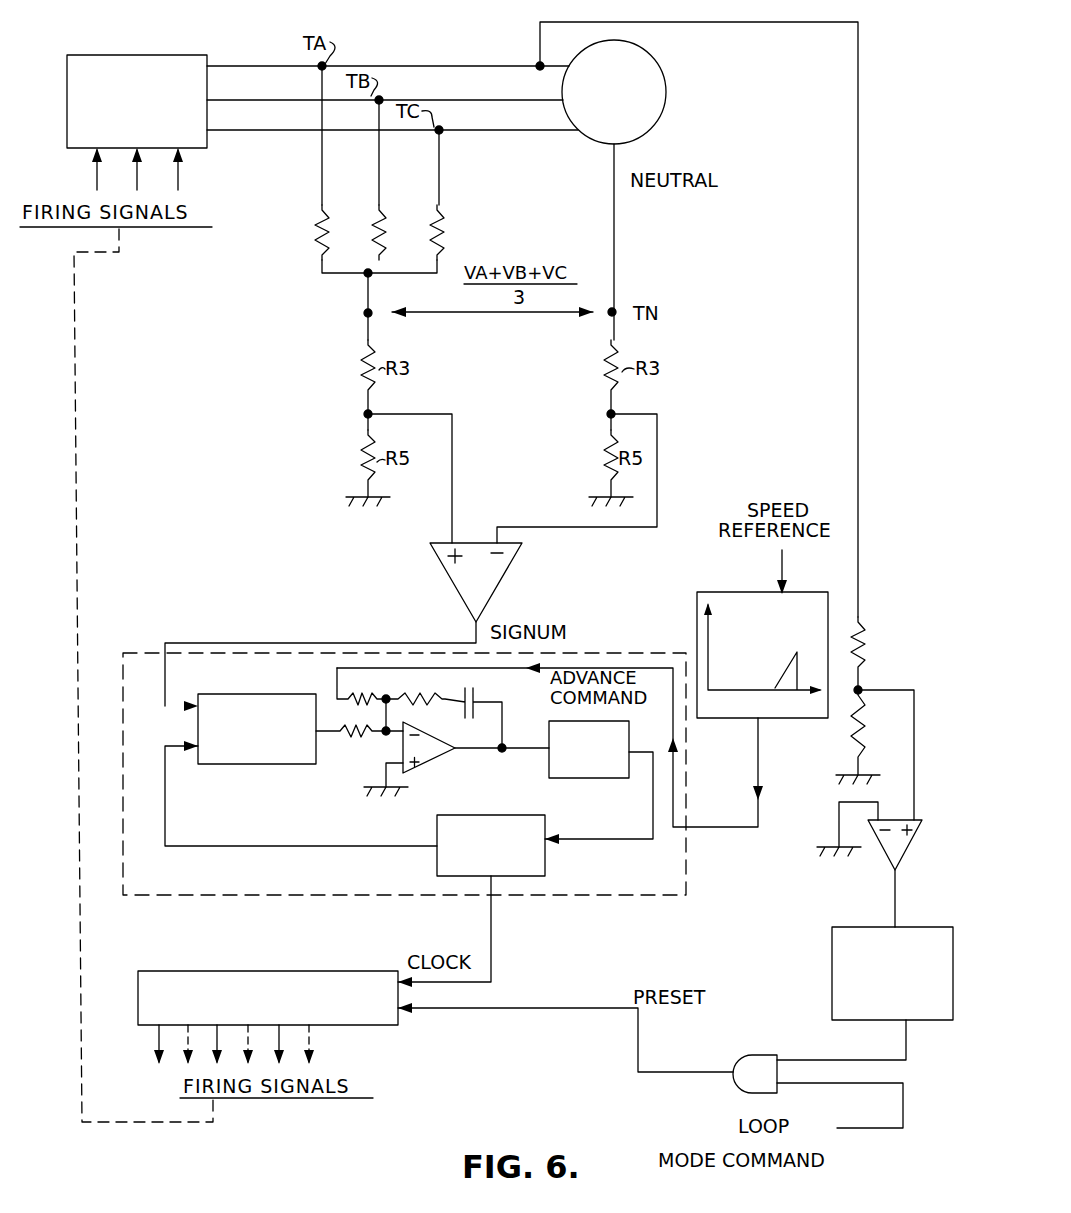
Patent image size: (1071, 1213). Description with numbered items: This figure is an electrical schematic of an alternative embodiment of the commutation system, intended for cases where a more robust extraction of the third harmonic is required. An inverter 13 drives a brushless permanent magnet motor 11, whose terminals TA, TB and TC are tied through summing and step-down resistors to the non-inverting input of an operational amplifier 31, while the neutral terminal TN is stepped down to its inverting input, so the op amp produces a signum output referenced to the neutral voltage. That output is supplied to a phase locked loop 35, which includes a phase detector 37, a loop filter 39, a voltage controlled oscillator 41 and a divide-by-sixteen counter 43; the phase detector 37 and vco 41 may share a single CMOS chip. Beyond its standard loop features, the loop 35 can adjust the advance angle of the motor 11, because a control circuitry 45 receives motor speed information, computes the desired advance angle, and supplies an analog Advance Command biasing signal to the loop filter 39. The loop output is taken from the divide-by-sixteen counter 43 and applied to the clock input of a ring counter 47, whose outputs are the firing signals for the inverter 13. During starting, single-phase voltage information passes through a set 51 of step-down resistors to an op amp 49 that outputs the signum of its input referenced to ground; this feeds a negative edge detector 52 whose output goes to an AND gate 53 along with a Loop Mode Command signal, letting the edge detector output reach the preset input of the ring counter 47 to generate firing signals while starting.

The brushless permanent magnet motor 11 is at (665, 81).
The inverter 13 is at (205, 55).
The operational amplifier 31 is at (451, 580).
The phase locked loop 35 is at (135, 660).
The phase detector 37 is at (265, 694).
The loop filter 39 is at (370, 764).
The voltage controlled oscillator 41 is at (629, 741).
The divide-by-sixteen counter 43 is at (520, 796).
The control circuitry 45 is at (822, 592).
The ring counter 47 is at (325, 971).
The op amp 49 is at (905, 848).
The set of step-down resistors 51 is at (876, 681).
The negative edge detector 52 is at (832, 957).
The AND gate 53 is at (768, 1055).